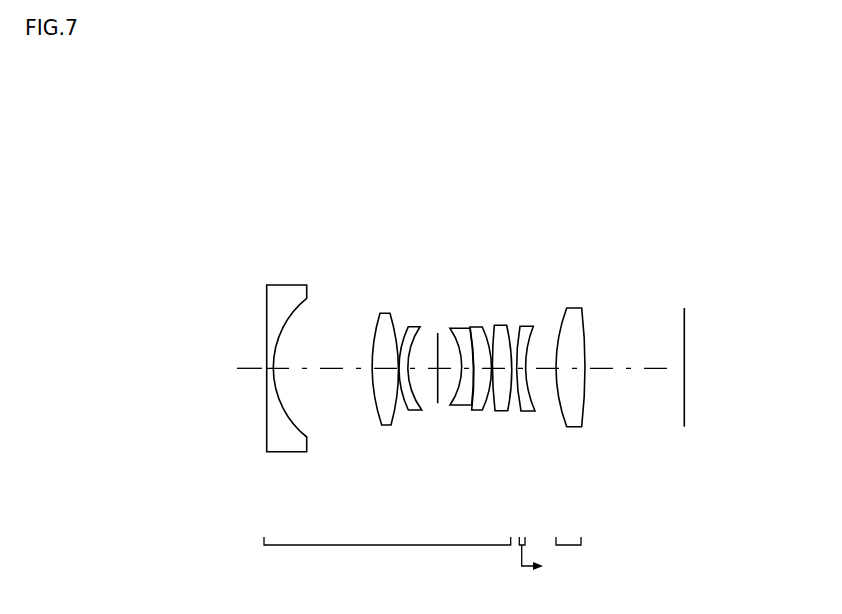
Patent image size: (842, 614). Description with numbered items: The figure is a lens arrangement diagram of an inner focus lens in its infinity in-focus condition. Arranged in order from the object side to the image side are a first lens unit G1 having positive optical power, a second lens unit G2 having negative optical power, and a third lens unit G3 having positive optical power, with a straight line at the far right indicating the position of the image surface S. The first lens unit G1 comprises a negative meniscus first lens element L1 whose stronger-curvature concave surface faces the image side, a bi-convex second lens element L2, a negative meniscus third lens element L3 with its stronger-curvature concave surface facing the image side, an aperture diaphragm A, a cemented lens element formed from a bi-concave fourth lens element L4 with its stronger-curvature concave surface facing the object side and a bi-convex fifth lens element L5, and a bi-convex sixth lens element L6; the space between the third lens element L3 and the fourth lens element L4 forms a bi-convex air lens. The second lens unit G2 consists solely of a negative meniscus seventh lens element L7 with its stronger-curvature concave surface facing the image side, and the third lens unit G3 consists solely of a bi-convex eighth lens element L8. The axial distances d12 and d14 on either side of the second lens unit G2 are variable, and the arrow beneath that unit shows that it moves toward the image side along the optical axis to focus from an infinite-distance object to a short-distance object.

The first lens element L1 is at (287, 290).
The second lens element L2 is at (388, 318).
The third lens element L3 is at (413, 332).
The aperture diaphragm A is at (438, 333).
The fourth lens element L4 is at (462, 330).
The fifth lens element L5 is at (477, 328).
The sixth lens element L6 is at (502, 332).
The seventh lens element L7 is at (528, 332).
The eighth lens element L8 is at (573, 313).
The image surface S is at (684, 342).
The axial distance d12 is at (518, 367).
The axial distance d14 is at (557, 368).
The first lens unit G1 is at (387, 528).
The second lens unit G2 is at (520, 540).
The third lens unit G3 is at (578, 528).